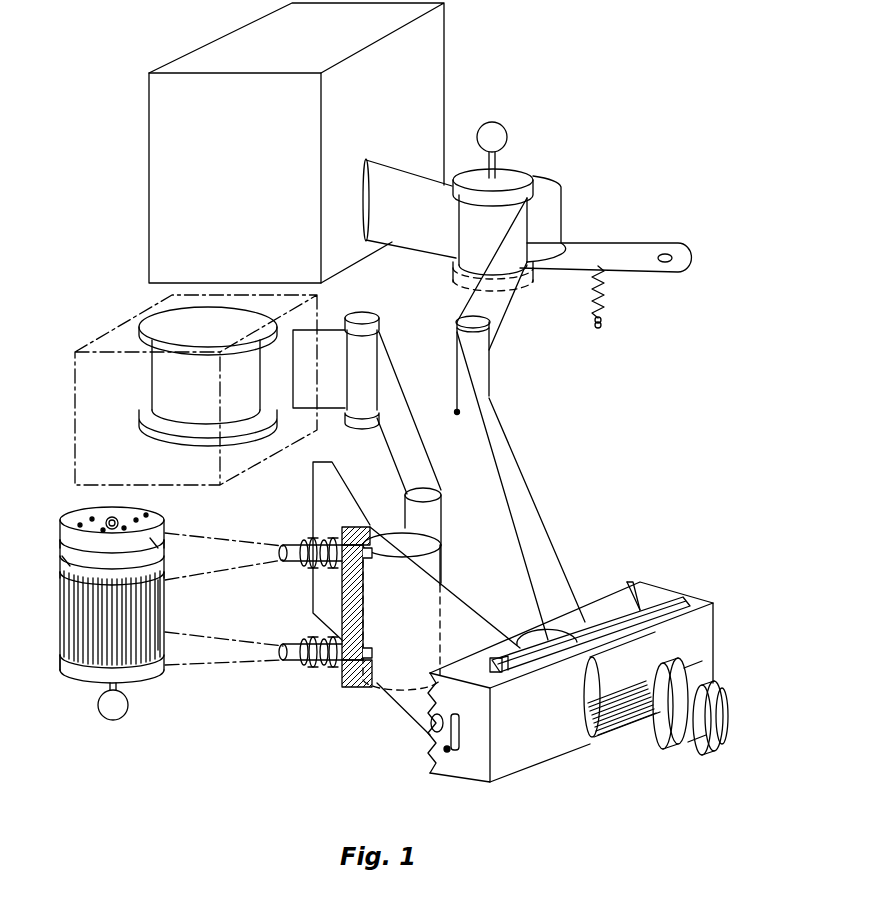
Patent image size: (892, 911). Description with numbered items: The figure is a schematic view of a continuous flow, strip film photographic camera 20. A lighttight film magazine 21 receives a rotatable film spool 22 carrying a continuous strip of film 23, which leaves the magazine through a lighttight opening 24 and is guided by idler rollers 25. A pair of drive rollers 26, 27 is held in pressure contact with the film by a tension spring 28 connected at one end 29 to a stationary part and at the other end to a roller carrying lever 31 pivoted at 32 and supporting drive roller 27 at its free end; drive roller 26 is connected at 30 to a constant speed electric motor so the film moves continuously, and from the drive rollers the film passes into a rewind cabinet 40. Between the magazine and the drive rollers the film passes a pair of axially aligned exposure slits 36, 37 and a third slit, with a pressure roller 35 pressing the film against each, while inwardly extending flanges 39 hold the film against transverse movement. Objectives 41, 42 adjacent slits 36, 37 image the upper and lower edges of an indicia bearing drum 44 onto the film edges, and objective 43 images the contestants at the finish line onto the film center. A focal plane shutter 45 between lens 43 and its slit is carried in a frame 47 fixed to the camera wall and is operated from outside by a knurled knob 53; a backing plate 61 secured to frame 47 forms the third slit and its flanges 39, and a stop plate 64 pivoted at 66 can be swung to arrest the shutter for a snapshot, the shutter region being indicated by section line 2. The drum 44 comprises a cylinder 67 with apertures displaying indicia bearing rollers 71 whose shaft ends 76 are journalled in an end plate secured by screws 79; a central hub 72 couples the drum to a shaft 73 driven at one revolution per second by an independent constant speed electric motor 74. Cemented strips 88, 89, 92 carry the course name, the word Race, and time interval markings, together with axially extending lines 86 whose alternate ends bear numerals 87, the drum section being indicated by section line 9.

The photographic camera 20 is at (146, 70).
The rewind cabinet 40 is at (448, 40).
The film 23 is at (416, 186).
The source of motive power 30 is at (507, 132).
The drive roller 27 is at (562, 196).
The drive roller 26 is at (457, 272).
The roller carrying lever 31 is at (634, 250).
The pivot 32 is at (670, 252).
The tension spring 28 is at (606, 290).
The spring connection 29 is at (598, 328).
The film magazine 21 is at (78, 372).
The film spool 22 is at (162, 322).
The lighttight opening 24 is at (304, 412).
The idler rollers 25 is at (360, 316).
The pressure roller 35 is at (424, 568).
The flanges 39 is at (370, 540).
The exposure slit 36 is at (366, 560).
The exposure slit 37 is at (364, 656).
The objective 41 is at (302, 566).
The objective 42 is at (306, 668).
The frame 47 is at (660, 612).
The backing plate 61 is at (614, 618).
The focal plane shutter 45 is at (508, 672).
The operating knob 53 is at (446, 714).
The stop plate 64 is at (462, 728).
The pivot 66 is at (450, 752).
The objective 43 is at (622, 744).
The section line 2 is at (388, 766).
The indicia bearing drum 44 is at (60, 634).
The hub 72 is at (114, 518).
The shaft ends 76 is at (94, 516).
The screws 79 is at (148, 514).
The strip length 88 is at (62, 520).
The section line 9 is at (46, 570).
The indicia bearing rollers 71 is at (58, 552).
The strip length 89 is at (166, 544).
The strip length 92 is at (64, 568).
The numerals 87 is at (166, 578).
The indicia 86 is at (166, 604).
The cylinder 67 is at (70, 670).
The shaft 73 is at (120, 688).
The electric motor 74 is at (124, 720).